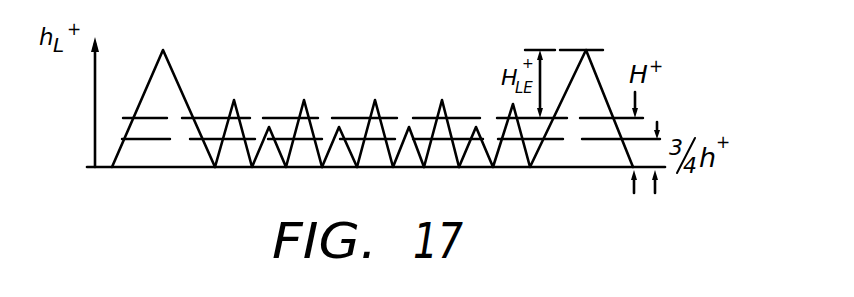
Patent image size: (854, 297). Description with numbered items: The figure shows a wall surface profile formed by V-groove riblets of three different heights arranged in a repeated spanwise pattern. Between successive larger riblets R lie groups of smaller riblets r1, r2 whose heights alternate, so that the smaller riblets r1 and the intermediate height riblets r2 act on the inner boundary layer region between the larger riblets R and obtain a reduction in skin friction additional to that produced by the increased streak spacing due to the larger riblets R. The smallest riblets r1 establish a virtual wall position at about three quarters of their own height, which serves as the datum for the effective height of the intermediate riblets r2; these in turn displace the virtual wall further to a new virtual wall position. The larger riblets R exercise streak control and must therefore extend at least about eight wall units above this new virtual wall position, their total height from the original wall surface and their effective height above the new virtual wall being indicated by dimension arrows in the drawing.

The larger riblets R is at (175, 83).
The smaller riblets r1 is at (411, 147).
The intermediate height riblets r2 is at (306, 128).